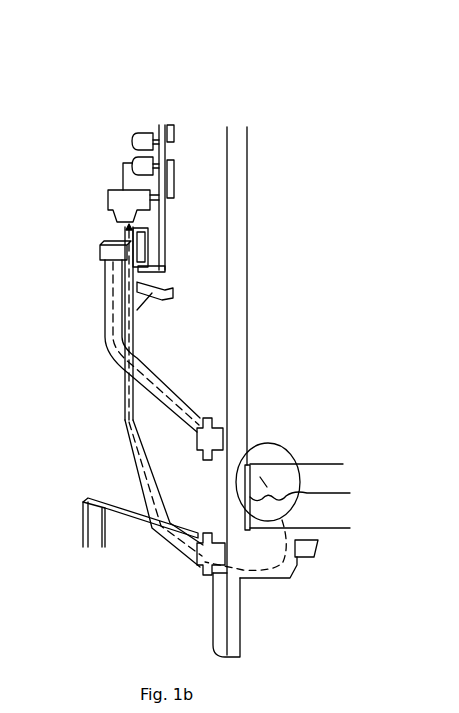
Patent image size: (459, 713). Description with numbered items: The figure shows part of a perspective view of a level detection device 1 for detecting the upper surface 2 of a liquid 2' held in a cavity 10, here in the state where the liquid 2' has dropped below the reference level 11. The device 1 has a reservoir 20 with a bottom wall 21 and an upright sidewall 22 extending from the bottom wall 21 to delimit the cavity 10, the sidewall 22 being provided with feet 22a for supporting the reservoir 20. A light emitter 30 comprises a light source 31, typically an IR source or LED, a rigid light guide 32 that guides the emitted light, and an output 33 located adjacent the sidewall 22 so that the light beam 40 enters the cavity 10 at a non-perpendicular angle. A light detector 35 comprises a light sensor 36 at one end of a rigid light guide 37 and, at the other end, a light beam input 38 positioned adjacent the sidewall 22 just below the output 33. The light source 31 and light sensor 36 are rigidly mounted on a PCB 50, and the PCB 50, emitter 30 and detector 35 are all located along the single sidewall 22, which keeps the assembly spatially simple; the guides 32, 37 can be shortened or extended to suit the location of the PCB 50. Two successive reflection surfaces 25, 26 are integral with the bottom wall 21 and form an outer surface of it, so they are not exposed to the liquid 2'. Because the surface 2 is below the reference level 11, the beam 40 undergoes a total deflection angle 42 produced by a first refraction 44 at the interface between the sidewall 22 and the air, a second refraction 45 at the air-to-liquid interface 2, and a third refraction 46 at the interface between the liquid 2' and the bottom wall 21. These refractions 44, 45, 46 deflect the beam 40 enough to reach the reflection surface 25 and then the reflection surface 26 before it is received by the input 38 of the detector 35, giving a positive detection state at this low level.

The level detection device 1 is at (307, 101).
The cavity 10 is at (280, 278).
The reservoir 20 is at (213, 140).
The sidewall 22 is at (245, 232).
The feet 22a is at (85, 530).
The light sensor 36 is at (116, 195).
The PCB 50 is at (162, 232).
The light source 31 is at (90, 248).
The light guide 32 is at (95, 322).
The light emitter 30 is at (164, 357).
The light guide 37 is at (110, 400).
The light detector 35 is at (109, 434).
The output 33 is at (212, 438).
The light beam input 38 is at (198, 572).
The total deflection angle 42 is at (224, 501).
The reference level 11 is at (317, 460).
The upper surface 2 is at (312, 480).
The liquid 2' is at (347, 499).
The bottom wall 21 is at (322, 536).
The light beam 40 is at (300, 545).
The third refraction 46 is at (285, 532).
The first refraction 44 is at (250, 470).
The second refraction 45 is at (268, 494).
The reflection surface 25 is at (309, 572).
The reflection surface 26 is at (276, 590).